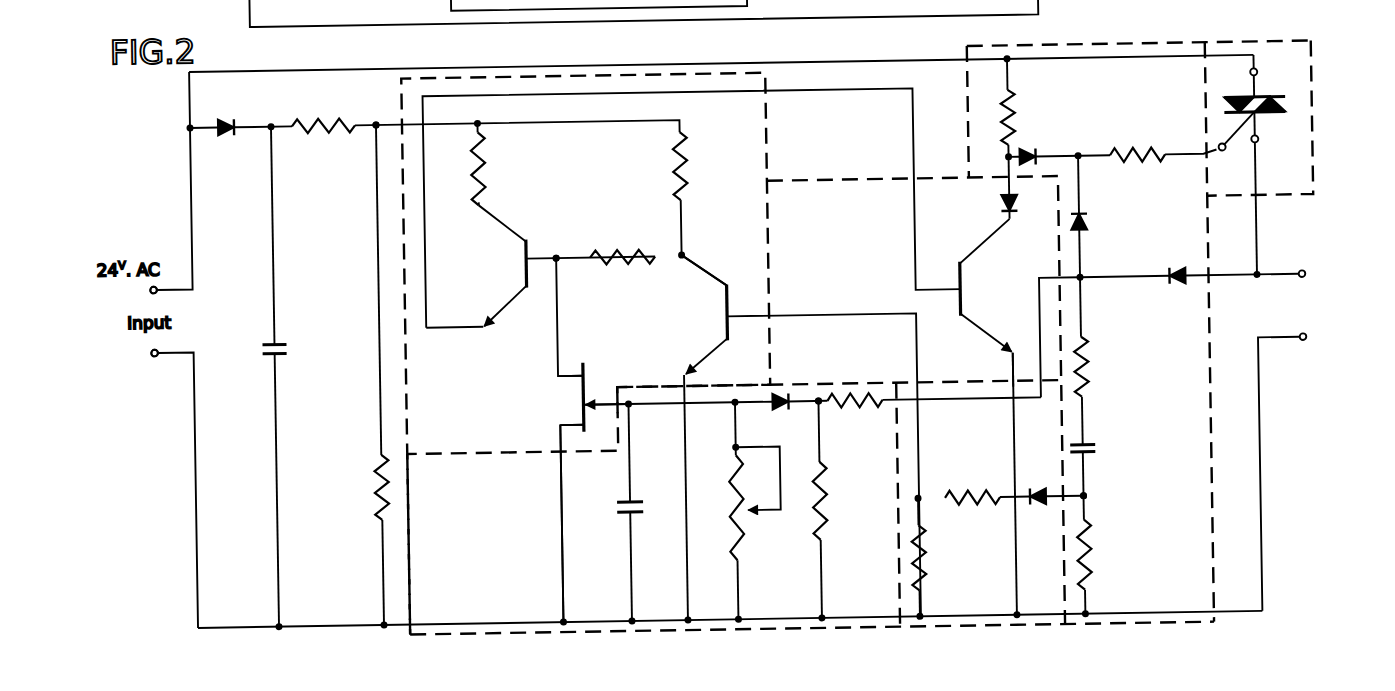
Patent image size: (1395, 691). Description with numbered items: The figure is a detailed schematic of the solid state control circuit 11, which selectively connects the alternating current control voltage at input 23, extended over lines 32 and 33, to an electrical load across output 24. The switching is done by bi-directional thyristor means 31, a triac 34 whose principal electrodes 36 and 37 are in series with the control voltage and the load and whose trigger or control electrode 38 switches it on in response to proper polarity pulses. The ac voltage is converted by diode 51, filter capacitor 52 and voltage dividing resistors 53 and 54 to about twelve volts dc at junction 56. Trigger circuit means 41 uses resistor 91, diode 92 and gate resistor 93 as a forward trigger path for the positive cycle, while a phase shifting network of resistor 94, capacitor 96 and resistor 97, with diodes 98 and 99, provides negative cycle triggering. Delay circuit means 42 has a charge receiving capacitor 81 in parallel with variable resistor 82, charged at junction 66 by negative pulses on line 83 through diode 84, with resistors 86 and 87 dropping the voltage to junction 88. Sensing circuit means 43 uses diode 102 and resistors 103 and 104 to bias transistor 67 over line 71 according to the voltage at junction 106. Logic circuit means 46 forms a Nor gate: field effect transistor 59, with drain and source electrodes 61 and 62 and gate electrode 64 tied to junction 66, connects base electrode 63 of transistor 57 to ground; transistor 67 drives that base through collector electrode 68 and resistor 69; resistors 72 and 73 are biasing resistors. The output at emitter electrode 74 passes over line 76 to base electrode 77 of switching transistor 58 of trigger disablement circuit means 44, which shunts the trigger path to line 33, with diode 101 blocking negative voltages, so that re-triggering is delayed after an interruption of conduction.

The circuit 11 is at (178, 162).
The input 23 is at (144, 354).
The output 24 is at (1314, 300).
The bi-directional thyristor means 31 is at (1283, 51).
The line 32 is at (889, 71).
The line 33 is at (442, 626).
The triac 34 is at (1262, 130).
The electrode 36 is at (1258, 88).
The electrode 37 is at (1258, 159).
The trigger or control electrode 38 is at (1224, 168).
The trigger circuit means 41 is at (1158, 55).
The electrical delay circuit means 42 is at (396, 586).
The sensing circuit means 43 is at (888, 582).
The trigger disablement circuit means 44 is at (934, 184).
The logic circuit means 46 is at (771, 156).
The diode 51 is at (233, 118).
The filter capacitor 52 is at (274, 344).
The voltage dividing resistor 53 is at (318, 121).
The voltage dividing resistor 54 is at (367, 490).
The junction 56 is at (374, 126).
The transistor 57 is at (531, 244).
The switching transistor 58 is at (975, 338).
The field effect transistor 59 is at (580, 379).
The drain electrode 61 is at (563, 386).
The source electrode 62 is at (554, 484).
The base electrode 63 is at (543, 269).
The gate electrode 64 is at (604, 389).
The junction 66 is at (628, 415).
The transistor 67 is at (726, 294).
The collector electrode 68 is at (695, 283).
The resistor 69 is at (603, 257).
The line 71 is at (847, 324).
The biasing resistor 72 is at (484, 164).
The biasing resistor 73 is at (684, 164).
The emitter electrode 74 is at (490, 319).
The line 76 is at (843, 100).
The base electrode 77 is at (949, 300).
The charge receiving capacitor 81 is at (631, 524).
The variable resistor 82 is at (724, 512).
The line 83 is at (931, 414).
The diode 84 is at (769, 421).
The resistor 86 is at (858, 421).
The resistor 87 is at (824, 490).
The junction 88 is at (818, 418).
The resistor 91 is at (1018, 110).
The diode 92 is at (1027, 160).
The gate resistor 93 is at (1115, 162).
The resistor 94 is at (1086, 401).
The capacitor 96 is at (1087, 452).
The resistor 97 is at (1088, 566).
The diode 98 is at (1084, 232).
The diode 99 is at (1186, 266).
The diode 101 is at (1002, 216).
The diode 102 is at (1029, 502).
The voltage dividing resistor 103 is at (941, 495).
The voltage dividing resistor 104 is at (918, 547).
The junction 106 is at (1082, 509).